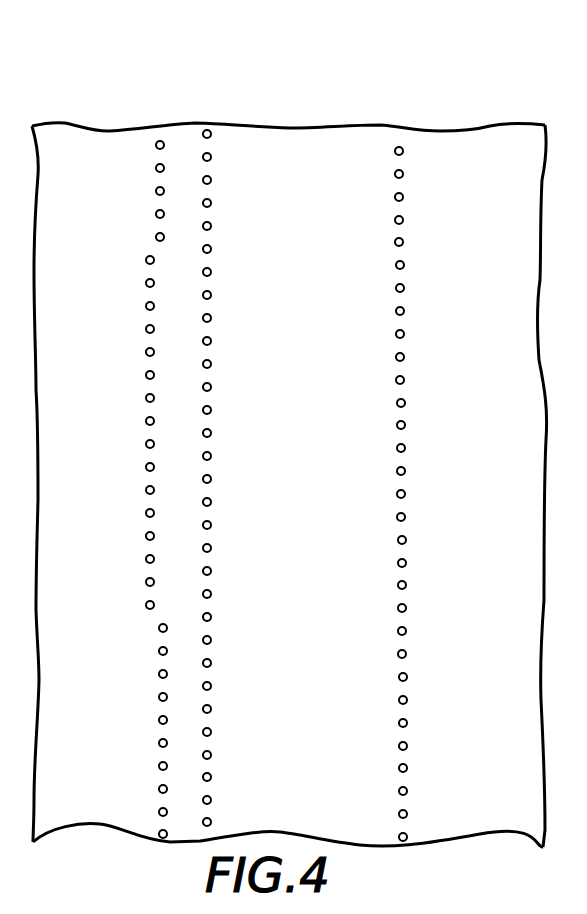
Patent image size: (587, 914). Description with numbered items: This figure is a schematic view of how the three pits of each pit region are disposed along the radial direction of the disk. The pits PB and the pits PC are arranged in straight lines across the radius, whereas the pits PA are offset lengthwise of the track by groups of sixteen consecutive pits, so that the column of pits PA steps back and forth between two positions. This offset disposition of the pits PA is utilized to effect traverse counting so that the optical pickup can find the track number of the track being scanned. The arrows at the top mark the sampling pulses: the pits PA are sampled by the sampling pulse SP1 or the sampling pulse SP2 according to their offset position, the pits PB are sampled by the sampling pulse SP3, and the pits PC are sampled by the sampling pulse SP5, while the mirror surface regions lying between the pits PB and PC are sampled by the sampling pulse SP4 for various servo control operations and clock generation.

The sampling pulse SP1 is at (148, 124).
The sampling pulse SP2 is at (160, 124).
The sampling pulse SP3 is at (205, 126).
The sampling pulse SP4 is at (313, 123).
The sampling pulse SP5 is at (397, 124).
The pit PA is at (156, 217).
The pit PB is at (211, 205).
The pit PC is at (403, 198).